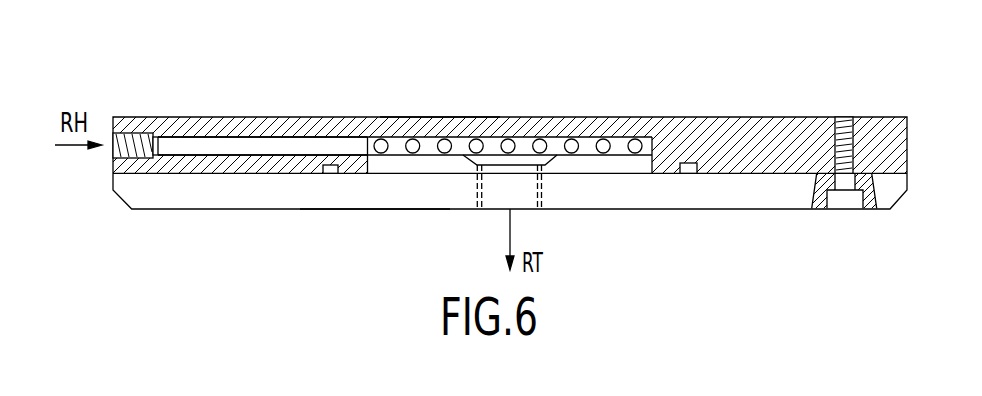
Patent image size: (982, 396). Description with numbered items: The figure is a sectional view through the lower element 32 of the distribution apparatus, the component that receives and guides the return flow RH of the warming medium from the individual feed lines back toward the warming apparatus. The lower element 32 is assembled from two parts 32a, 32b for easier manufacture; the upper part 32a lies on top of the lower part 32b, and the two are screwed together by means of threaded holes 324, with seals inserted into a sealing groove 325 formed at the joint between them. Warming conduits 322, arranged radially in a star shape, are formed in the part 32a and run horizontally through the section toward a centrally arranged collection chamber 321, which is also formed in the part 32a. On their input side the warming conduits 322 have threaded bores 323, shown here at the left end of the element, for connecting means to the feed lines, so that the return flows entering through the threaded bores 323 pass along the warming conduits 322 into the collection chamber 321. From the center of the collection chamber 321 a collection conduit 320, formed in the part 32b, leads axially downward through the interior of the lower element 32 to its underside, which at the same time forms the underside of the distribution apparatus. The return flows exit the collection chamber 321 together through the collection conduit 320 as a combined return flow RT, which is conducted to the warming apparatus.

The lower element 32 is at (564, 110).
The part 32a is at (436, 116).
The part 32b is at (368, 210).
The collection conduit 320 is at (523, 203).
The collection chamber 321 is at (460, 147).
The warming conduits 322 is at (245, 142).
The threaded bores 323 is at (131, 141).
The threaded holes 324 is at (847, 118).
The sealing groove 325 is at (690, 172).